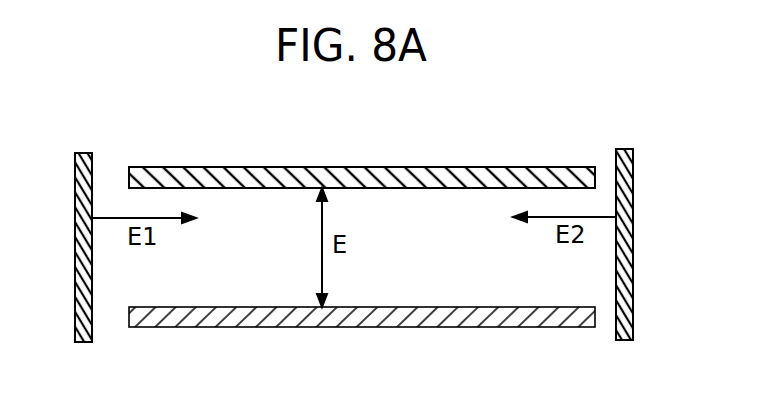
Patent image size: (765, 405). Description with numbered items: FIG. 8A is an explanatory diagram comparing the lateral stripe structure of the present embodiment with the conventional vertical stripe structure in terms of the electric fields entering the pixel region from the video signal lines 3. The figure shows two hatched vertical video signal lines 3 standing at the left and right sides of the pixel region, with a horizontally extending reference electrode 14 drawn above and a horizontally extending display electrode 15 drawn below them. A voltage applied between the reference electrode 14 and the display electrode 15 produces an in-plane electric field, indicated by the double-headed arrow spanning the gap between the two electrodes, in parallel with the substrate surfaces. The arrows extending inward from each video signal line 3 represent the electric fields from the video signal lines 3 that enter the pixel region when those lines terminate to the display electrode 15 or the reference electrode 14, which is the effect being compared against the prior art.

The video signal line 3 is at (75, 310).
The reference electrode 14 is at (492, 165).
The display electrode 15 is at (492, 327).